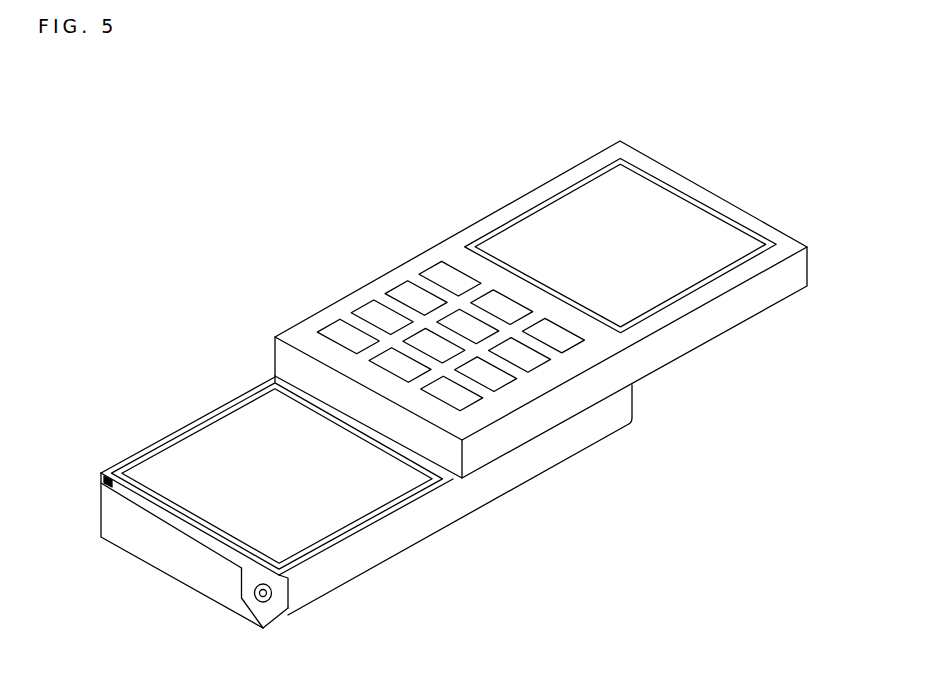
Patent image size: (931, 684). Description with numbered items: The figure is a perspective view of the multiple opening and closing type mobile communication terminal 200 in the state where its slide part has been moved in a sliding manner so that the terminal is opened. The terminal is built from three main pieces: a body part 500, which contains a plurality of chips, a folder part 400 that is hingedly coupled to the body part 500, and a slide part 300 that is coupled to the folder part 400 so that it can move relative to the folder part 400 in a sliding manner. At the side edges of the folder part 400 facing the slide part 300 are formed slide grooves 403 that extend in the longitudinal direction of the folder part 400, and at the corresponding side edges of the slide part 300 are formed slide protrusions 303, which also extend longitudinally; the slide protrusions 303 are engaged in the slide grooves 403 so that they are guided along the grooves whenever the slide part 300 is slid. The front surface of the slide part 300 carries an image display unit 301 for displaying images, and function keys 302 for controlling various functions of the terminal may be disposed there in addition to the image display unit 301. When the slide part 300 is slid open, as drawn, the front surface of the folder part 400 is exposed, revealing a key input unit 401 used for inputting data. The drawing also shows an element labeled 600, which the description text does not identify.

The multiple opening and closing type mobile communication terminal 200 is at (479, 154).
The slide part 300 is at (792, 273).
The image display unit 301 is at (683, 268).
The function keys 302 is at (369, 312).
The slide protrusions 303 is at (272, 370).
The folder part 400 is at (618, 412).
The key input unit 401 is at (245, 513).
The slide grooves 403 is at (116, 472).
The body part 500 is at (140, 540).
The fastening boss 600 is at (290, 604).